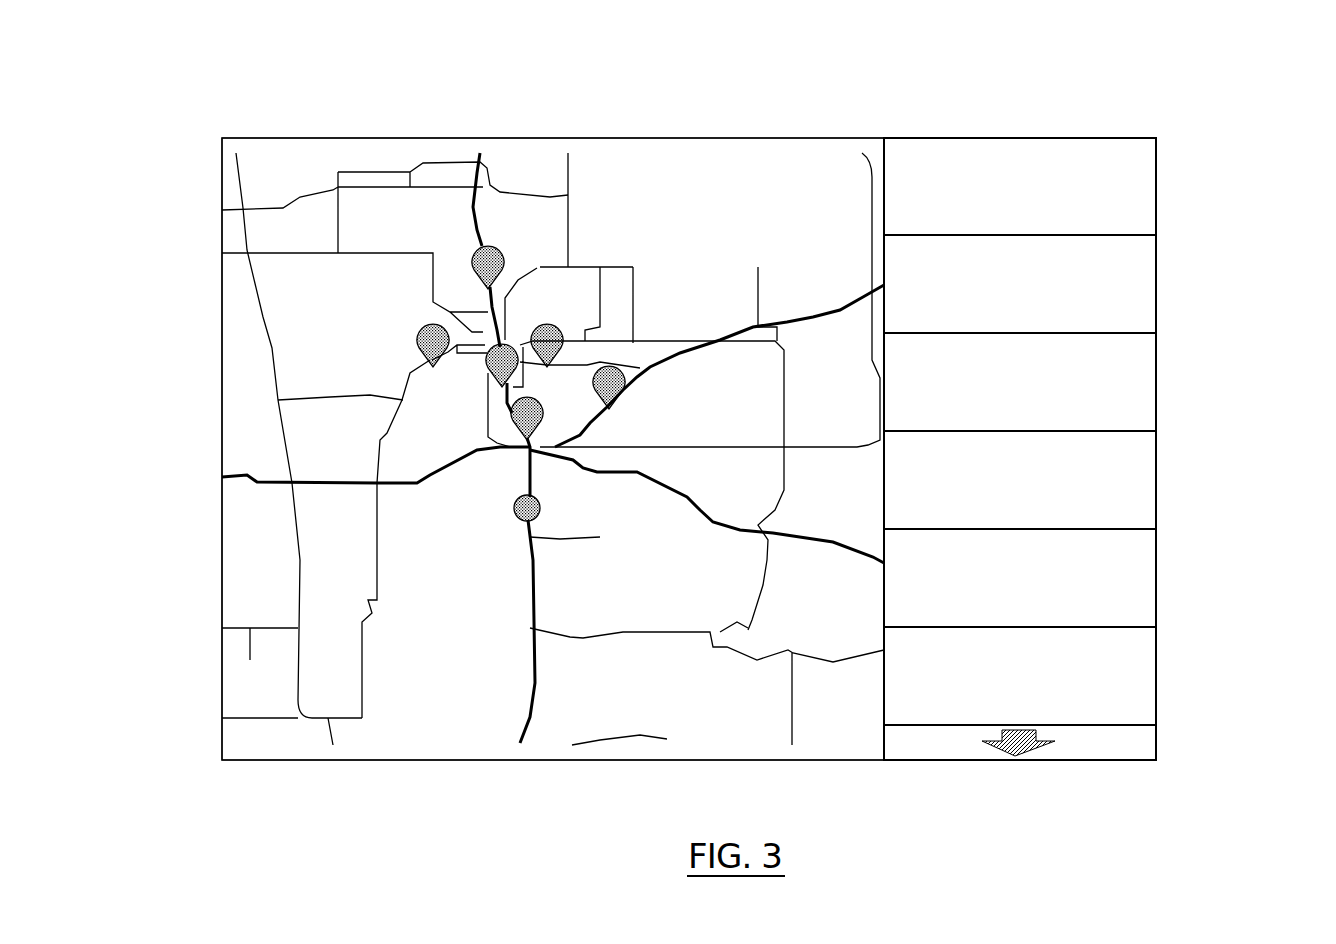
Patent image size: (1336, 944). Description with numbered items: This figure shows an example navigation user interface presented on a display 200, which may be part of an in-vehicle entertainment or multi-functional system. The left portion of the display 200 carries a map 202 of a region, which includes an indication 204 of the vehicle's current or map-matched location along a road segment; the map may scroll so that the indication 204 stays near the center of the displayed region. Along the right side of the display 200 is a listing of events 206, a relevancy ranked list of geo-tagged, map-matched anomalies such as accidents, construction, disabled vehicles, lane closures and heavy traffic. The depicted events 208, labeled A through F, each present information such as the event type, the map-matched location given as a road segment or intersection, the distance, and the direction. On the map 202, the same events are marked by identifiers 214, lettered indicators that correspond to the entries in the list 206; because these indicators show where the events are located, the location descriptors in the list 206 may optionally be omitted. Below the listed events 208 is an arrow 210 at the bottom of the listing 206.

The display 200 is at (903, 82).
The map 202 is at (382, 186).
The indication of current location 204 is at (520, 518).
The listing of events 206 is at (1092, 428).
The depicted events 208 is at (1090, 303).
The scroll arrow 210 is at (1012, 756).
The identifiers 214 is at (416, 333).